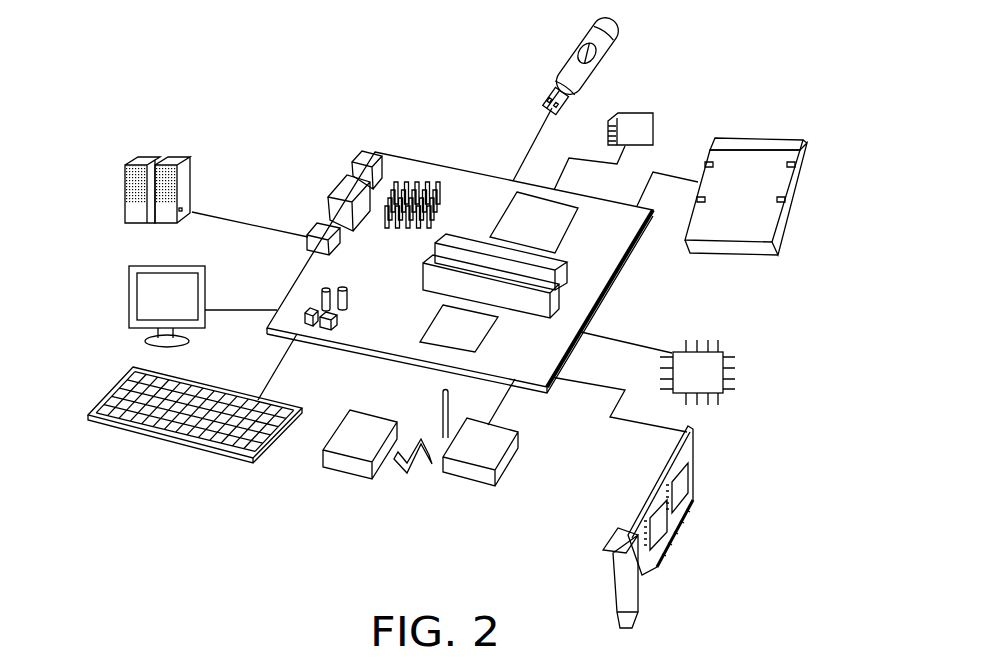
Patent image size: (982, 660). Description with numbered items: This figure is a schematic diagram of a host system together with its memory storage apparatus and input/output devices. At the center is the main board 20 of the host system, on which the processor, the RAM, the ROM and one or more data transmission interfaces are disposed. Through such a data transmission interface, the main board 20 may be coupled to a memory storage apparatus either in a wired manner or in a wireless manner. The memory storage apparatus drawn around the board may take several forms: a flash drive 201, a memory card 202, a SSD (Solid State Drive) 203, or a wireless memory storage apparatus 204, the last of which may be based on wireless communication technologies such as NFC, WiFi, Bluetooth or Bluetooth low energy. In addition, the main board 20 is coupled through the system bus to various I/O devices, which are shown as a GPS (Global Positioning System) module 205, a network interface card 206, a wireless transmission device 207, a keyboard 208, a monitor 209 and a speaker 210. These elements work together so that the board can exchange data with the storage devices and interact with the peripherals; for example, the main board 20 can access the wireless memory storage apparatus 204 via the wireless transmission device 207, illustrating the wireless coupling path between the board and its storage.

The main board 20 is at (462, 187).
The flash drive 201 is at (568, 53).
The memory card 202 is at (653, 119).
The SSD (Solid State Drive) 203 is at (760, 137).
The wireless memory storage apparatus 204 is at (335, 425).
The GPS (Global Positioning System) module 205 is at (735, 372).
The network interface card 206 is at (693, 477).
The wireless transmission device 207 is at (513, 460).
The keyboard 208 is at (198, 447).
The monitor 209 is at (129, 313).
The speaker 210 is at (125, 213).